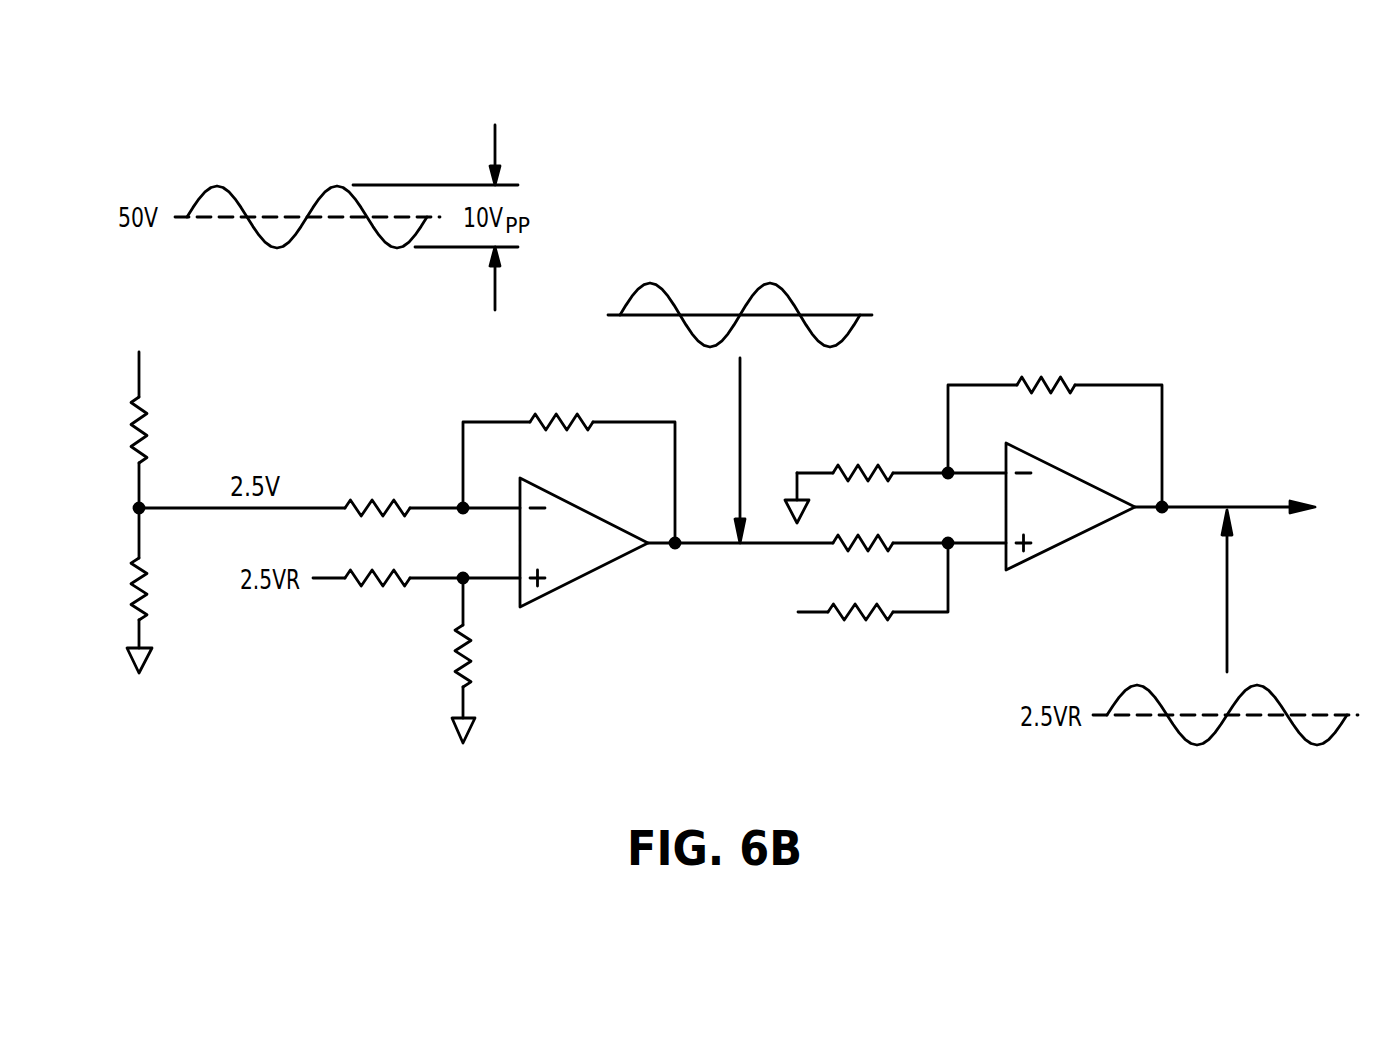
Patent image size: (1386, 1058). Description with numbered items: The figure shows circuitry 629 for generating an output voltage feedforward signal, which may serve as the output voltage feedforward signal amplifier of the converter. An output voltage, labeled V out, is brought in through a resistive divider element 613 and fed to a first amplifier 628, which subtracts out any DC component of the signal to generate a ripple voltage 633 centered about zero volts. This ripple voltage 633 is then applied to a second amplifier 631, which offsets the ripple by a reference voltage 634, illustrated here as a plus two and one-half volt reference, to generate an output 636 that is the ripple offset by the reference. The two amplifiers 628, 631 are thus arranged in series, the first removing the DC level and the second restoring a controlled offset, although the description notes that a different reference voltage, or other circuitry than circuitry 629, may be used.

The voltage divider resistor network 613 is at (141, 366).
The amplifier 628 is at (583, 507).
The circuitry 629 is at (368, 668).
The amplifier 631 is at (1070, 473).
The ripple voltage 633 is at (833, 313).
The reference voltage 634 is at (815, 613).
The output 636 is at (1257, 507).